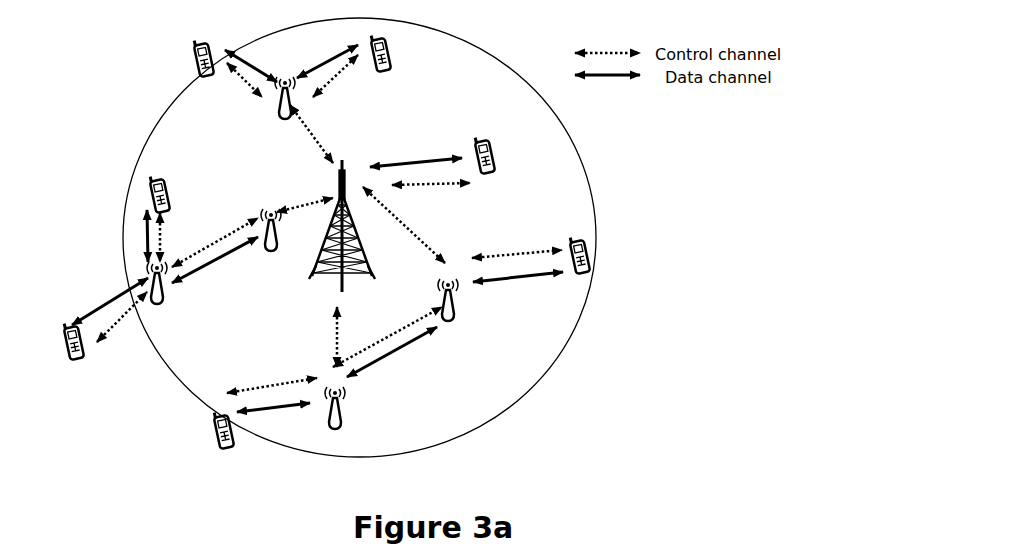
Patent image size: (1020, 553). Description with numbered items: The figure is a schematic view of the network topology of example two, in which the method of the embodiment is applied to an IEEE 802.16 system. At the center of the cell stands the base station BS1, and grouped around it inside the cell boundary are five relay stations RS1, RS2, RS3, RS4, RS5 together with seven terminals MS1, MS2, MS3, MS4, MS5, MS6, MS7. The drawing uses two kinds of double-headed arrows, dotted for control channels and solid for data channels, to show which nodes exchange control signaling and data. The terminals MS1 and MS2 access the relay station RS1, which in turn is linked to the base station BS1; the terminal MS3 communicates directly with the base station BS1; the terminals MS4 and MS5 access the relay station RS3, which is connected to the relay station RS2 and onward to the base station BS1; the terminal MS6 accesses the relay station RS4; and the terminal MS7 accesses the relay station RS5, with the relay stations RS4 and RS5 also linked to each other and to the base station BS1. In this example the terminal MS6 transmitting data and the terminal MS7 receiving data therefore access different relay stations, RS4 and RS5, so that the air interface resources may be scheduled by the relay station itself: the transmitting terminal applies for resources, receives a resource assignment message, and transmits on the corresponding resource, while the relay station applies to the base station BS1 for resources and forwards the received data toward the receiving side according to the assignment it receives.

The base station BS1 is at (361, 234).
The relay station RS1 is at (273, 113).
The relay station RS2 is at (260, 268).
The relay station RS3 is at (152, 301).
The relay station RS4 is at (345, 422).
The relay station RS5 is at (467, 313).
The terminal MS1 is at (192, 77).
The terminal MS2 is at (391, 68).
The terminal MS3 is at (509, 162).
The terminal MS4 is at (109, 198).
The terminal MS5 is at (66, 359).
The terminal MS6 is at (229, 450).
The terminal MS7 is at (593, 270).